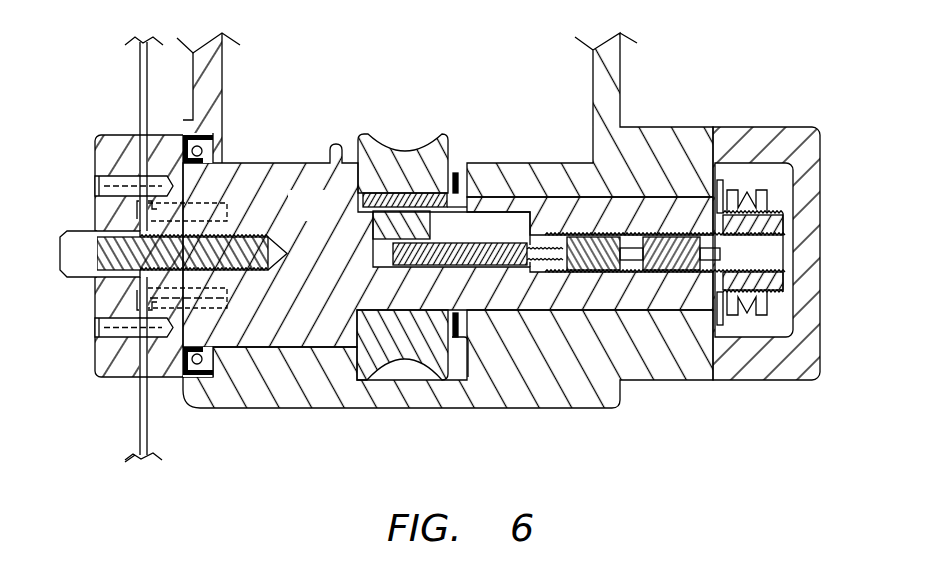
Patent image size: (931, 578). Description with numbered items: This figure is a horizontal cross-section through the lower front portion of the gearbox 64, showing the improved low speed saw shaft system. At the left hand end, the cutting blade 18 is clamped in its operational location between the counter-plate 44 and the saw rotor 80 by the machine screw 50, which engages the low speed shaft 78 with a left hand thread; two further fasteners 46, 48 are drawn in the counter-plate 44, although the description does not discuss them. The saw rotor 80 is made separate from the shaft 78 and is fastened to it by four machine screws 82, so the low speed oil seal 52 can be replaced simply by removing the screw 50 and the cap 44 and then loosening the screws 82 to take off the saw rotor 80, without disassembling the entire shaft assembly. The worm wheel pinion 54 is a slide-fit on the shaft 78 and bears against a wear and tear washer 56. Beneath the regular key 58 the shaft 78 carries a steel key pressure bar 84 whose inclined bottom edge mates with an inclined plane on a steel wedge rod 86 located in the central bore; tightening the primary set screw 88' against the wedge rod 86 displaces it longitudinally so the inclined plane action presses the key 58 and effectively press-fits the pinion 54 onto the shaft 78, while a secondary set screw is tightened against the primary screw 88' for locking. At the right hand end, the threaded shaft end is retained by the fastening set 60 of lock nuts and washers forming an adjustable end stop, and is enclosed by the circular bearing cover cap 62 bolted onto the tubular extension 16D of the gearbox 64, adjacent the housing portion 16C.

The cutting blade 18 is at (140, 74).
The counter-plate 44 is at (133, 153).
The set screw 46 is at (98, 182).
The set screw 48 is at (98, 334).
The machine screw 50 is at (95, 278).
The low speed oil seal 52 is at (198, 150).
The worm wheel pinion 54 is at (390, 160).
The wear and tear washer 56 is at (456, 170).
The key 58 is at (470, 195).
The fastening set 60 is at (753, 168).
The bearing cover cap 62 is at (762, 368).
The gearbox 64 is at (193, 500).
The low speed shaft 78 is at (323, 218).
The saw rotor 80 is at (180, 372).
The machine screws 82 is at (210, 303).
The key pressure bar 84 is at (425, 224).
The wedge rod 86 is at (458, 255).
The primary set screw 88' is at (605, 347).
The housing portion 16C is at (183, 385).
The tubular extension 16D is at (702, 381).